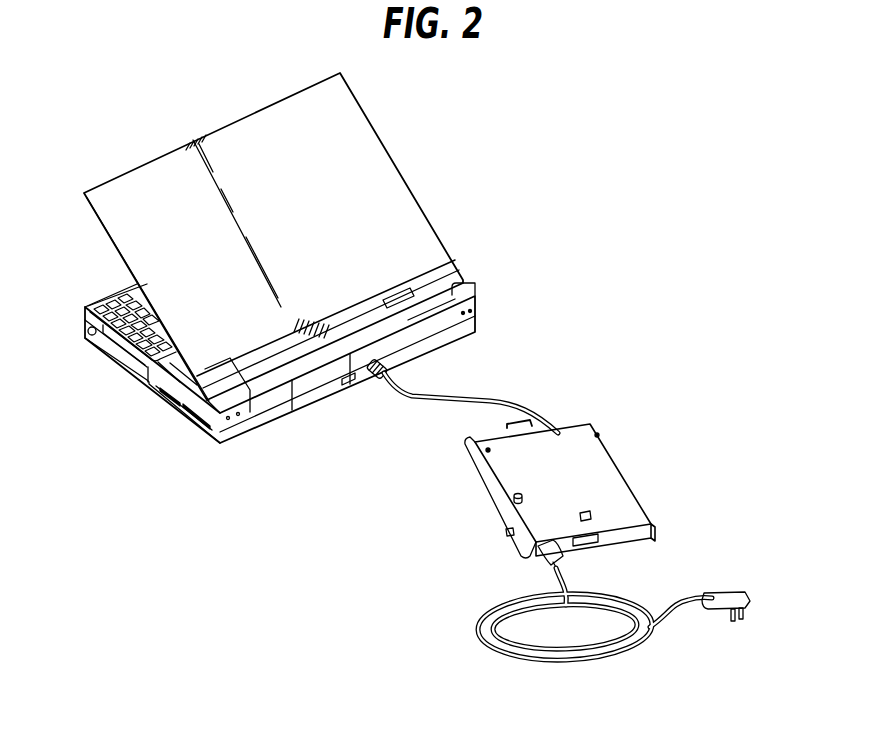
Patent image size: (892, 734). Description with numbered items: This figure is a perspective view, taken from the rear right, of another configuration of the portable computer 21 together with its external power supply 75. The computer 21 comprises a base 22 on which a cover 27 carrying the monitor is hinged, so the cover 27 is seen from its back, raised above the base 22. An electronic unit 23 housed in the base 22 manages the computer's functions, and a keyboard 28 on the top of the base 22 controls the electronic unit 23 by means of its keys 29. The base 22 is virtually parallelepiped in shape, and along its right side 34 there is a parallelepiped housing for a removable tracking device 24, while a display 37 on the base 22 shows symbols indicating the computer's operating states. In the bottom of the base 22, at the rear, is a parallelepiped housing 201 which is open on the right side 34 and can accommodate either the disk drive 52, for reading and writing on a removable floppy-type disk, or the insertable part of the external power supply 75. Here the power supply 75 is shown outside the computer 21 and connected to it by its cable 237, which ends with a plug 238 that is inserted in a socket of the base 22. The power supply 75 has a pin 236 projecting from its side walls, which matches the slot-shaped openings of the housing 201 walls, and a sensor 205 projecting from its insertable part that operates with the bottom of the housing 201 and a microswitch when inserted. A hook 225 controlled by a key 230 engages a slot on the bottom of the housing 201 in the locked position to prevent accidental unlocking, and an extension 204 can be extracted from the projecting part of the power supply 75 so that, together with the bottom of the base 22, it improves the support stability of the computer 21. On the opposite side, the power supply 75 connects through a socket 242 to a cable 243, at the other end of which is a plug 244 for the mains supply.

The portable computer 21 is at (446, 206).
The base 22 is at (478, 318).
The electronic unit 23 is at (243, 425).
The removable tracking device 24 is at (108, 350).
The cover 27 is at (372, 169).
The keyboard 28 is at (83, 308).
The keys 29 is at (123, 288).
The right side 34 is at (147, 376).
The display 37 is at (383, 312).
The disk drive 52 is at (188, 423).
The external power supply 75 is at (612, 445).
The housing 201 is at (155, 392).
The extension 204 is at (462, 441).
The sensor 205 is at (512, 497).
The hook 225 is at (592, 514).
The key 230 is at (590, 546).
The pin 236 is at (505, 531).
The cable 237 is at (502, 398).
The plug 238 is at (378, 381).
The socket 242 is at (530, 558).
The cable 243 is at (478, 637).
The plug 244 is at (717, 612).